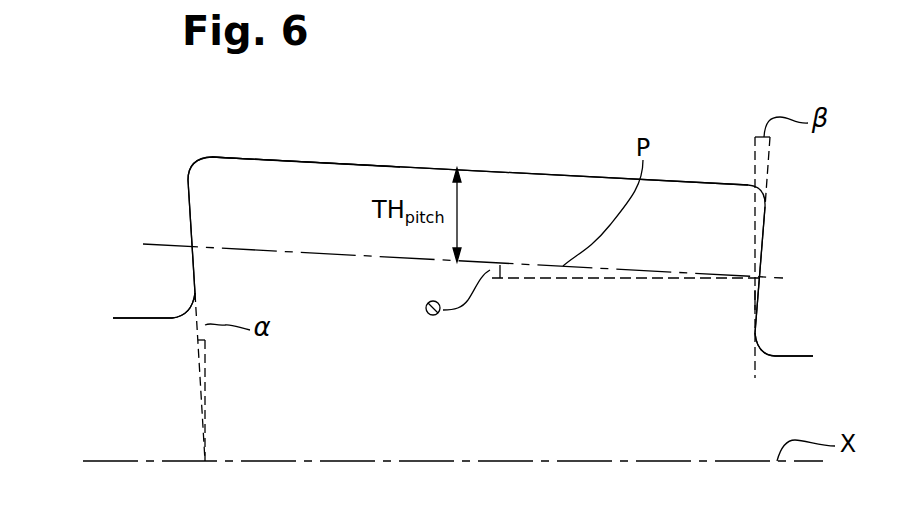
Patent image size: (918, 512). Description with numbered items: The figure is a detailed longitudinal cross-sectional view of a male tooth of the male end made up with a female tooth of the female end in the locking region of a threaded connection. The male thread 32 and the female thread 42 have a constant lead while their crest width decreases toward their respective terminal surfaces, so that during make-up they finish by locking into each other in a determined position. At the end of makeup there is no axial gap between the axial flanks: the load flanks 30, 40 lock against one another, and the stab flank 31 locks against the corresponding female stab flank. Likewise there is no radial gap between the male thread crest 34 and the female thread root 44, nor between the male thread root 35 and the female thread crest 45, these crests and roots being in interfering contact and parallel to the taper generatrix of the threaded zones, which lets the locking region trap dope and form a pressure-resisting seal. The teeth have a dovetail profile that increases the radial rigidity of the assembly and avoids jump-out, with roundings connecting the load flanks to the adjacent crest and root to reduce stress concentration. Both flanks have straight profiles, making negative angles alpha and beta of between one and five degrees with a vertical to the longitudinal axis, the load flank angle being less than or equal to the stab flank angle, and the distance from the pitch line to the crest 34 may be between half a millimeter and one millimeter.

The load flank 30 is at (190, 260).
The stab flank 31 is at (763, 245).
The male thread 32 is at (384, 330).
The male thread crest 34 is at (352, 164).
The male thread root 35 is at (135, 320).
The load flank 40 is at (188, 215).
The female thread 42 is at (159, 140).
The female thread root 44 is at (352, 164).
The female thread crest 45 is at (122, 316).